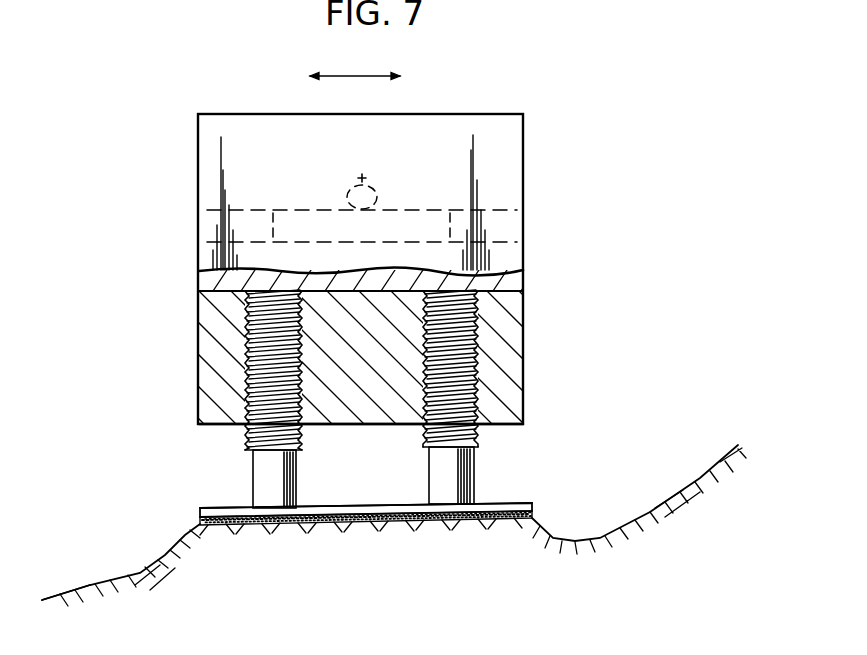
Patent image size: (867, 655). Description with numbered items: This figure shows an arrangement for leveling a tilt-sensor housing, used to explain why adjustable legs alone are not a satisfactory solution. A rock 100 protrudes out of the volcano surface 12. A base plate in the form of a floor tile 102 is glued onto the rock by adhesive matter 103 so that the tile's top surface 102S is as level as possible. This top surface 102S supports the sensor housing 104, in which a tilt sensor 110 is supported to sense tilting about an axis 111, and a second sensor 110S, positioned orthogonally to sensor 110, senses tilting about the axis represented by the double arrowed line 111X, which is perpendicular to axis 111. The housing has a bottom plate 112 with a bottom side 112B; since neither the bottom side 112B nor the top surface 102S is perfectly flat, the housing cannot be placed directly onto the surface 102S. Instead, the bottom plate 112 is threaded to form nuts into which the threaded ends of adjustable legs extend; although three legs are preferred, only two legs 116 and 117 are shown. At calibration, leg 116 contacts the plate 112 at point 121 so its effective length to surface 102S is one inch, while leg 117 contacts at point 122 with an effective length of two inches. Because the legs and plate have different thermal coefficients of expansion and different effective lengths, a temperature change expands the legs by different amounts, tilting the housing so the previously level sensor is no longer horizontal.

The double arrowed line 111X is at (333, 76).
The tilt sensor 110 is at (433, 213).
The second sensor 110S is at (362, 170).
The sensor housing 104 is at (521, 268).
The bottom plate 112 is at (523, 380).
The bottom side 112B is at (510, 426).
The contact point 121 is at (245, 430).
The contact point 122 is at (472, 305).
The leg 116 is at (253, 485).
The leg 117 is at (455, 472).
The axis 111 is at (357, 466).
The floor tile 102 is at (531, 503).
The top surface 102S is at (352, 506).
The adhesive matter 103 is at (390, 520).
The rock 100 is at (178, 545).
The volcano surface 12 is at (82, 586).